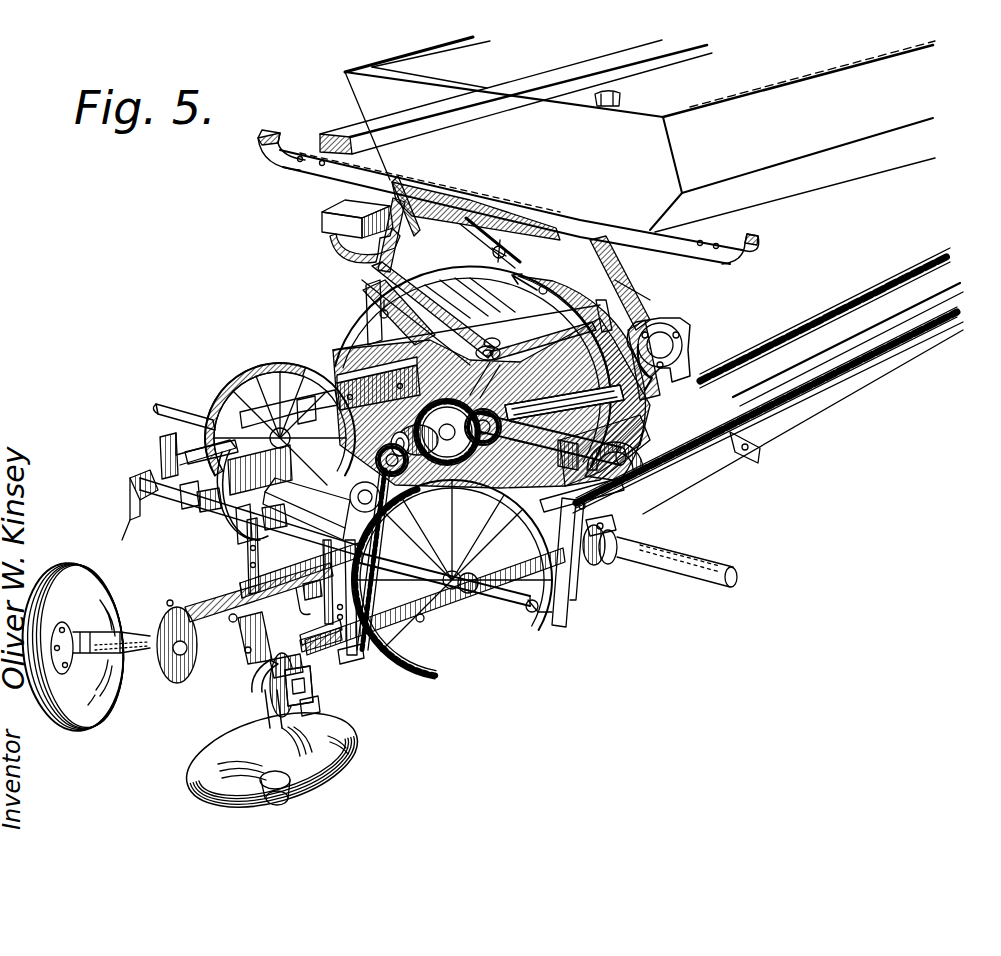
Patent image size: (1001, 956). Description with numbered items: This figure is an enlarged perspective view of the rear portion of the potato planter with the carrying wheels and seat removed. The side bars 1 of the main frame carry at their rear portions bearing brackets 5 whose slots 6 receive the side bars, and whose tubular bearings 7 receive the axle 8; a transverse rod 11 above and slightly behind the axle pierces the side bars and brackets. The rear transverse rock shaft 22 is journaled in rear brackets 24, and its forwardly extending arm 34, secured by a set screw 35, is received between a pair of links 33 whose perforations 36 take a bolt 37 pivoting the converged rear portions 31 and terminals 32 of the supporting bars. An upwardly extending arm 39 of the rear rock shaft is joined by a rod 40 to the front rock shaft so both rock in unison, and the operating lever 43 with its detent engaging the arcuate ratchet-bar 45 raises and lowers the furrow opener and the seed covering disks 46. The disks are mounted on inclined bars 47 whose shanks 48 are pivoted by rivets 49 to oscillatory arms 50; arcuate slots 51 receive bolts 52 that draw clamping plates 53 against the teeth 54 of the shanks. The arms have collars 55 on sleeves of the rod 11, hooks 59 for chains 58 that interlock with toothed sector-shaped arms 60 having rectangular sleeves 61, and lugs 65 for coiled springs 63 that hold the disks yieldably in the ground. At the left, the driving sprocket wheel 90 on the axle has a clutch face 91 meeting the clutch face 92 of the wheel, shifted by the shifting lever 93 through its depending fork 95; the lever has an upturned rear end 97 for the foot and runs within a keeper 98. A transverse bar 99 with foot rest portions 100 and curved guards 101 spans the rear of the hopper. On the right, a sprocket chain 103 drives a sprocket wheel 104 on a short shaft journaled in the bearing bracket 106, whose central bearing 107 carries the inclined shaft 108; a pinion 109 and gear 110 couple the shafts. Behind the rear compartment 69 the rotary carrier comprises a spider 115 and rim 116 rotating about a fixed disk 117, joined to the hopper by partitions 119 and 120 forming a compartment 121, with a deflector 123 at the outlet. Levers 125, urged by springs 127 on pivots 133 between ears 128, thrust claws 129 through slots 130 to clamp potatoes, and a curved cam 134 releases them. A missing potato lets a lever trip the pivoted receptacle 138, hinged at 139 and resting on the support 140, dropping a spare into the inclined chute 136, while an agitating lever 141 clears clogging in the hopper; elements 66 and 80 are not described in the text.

The side bars 1 is at (868, 378).
The bearing brackets 5 is at (620, 524).
The slots or bifurcations 6 is at (655, 542).
The bearings 7 is at (610, 562).
The axle 8 is at (695, 582).
The transverse rod 11 is at (578, 549).
The rear transverse rock shaft 22 is at (228, 527).
The rear brackets 24 is at (140, 486).
The rear portions of the supporting bars 31 is at (258, 645).
The terminals of the supporting bars 32 is at (358, 665).
The links 33 is at (300, 532).
The arm 34 is at (307, 503).
The set screw 35 is at (245, 556).
The perforations 36 is at (300, 641).
The bolt 37 is at (366, 660).
The upwardly extending arm 39 is at (566, 600).
The rod or bar 40 is at (803, 393).
The operating lever 43 is at (454, 542).
The arcuate ratchet-bar 45 is at (574, 578).
The seed covering disks 46 is at (47, 705).
The inclined bars or members 47 is at (140, 660).
The shanks 48 is at (212, 613).
The rivets 49 is at (244, 648).
The oscillatory arms 50 is at (406, 676).
The arcuate slots 51 is at (176, 686).
The bolts 52 is at (245, 652).
The clamping plates 53 is at (322, 708).
The corrugations or teeth 54 is at (280, 664).
The collars or eyes 55 is at (375, 547).
The chains 58 is at (272, 534).
The hooks 59 is at (252, 573).
The toothed sector-shaped arms 60 is at (212, 512).
The rectangular sleeves 61 is at (185, 512).
The coiled springs 63 is at (493, 616).
The lugs 65 is at (235, 621).
The trough 66 is at (792, 195).
The rear compartment 69 is at (640, 115).
The bar 80 is at (527, 87).
The driving sprocket wheel 90 is at (222, 394).
The clutch face or member 91 is at (248, 407).
The clutch face or member 92 is at (208, 447).
The shifting lever 93 is at (272, 378).
The depending fork 95 is at (305, 420).
The upturned rear end 97 is at (158, 436).
The keeper 98 is at (160, 453).
The transverse bar 99 is at (551, 211).
The foot rest portions 100 is at (310, 166).
The guards 101 is at (275, 136).
The sprocket chain 103 is at (823, 320).
The sprocket wheel 104 is at (667, 478).
The bearing bracket or frame 106 is at (574, 427).
The central bearing 107 is at (502, 345).
The inclined longitudinally disposed shaft 108 is at (389, 442).
The pinion 109 is at (551, 421).
The gear 110 is at (418, 432).
The spider 115 is at (431, 339).
The rim 116 is at (657, 346).
The fixed disk or plate 117 is at (433, 310).
The longitudinal wall or partition 119 is at (466, 219).
The bottom wall or partition 120 is at (473, 366).
The compartment 121 is at (389, 312).
The deflector 123 is at (378, 383).
The levers 125 is at (610, 327).
The actuating spring 127 is at (631, 316).
The ears 128 is at (500, 246).
The bifurcated portion or claw 129 is at (544, 286).
The slot or opening 130 is at (561, 268).
The pivot 133 is at (512, 330).
The curved cam or member 134 is at (372, 313).
The inclined chute 136 is at (432, 214).
The pivoted receptacle 138 is at (330, 222).
The hinge or pivot 139 is at (396, 201).
The support 140 is at (365, 253).
The lever 141 is at (608, 106).